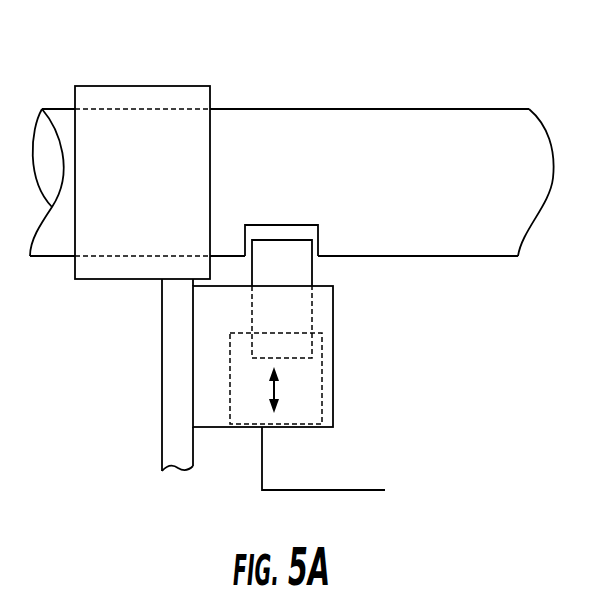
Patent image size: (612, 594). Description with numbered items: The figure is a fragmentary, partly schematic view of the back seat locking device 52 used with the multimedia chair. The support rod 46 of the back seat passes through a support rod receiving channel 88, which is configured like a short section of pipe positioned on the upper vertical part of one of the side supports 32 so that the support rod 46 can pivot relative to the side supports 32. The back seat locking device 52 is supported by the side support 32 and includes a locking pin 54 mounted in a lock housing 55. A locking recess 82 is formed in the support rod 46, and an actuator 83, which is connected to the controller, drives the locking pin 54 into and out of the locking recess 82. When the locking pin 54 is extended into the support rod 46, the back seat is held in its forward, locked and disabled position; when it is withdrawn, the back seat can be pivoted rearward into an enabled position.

The side support 32 is at (162, 353).
The support rod 46 is at (479, 108).
The back seat locking device 52 is at (388, 48).
The locking pin 54 is at (297, 268).
The lock housing 55 is at (333, 319).
The locking recess 82 is at (318, 233).
The actuator 83 is at (322, 381).
The support rod receiving channel 88 is at (191, 86).